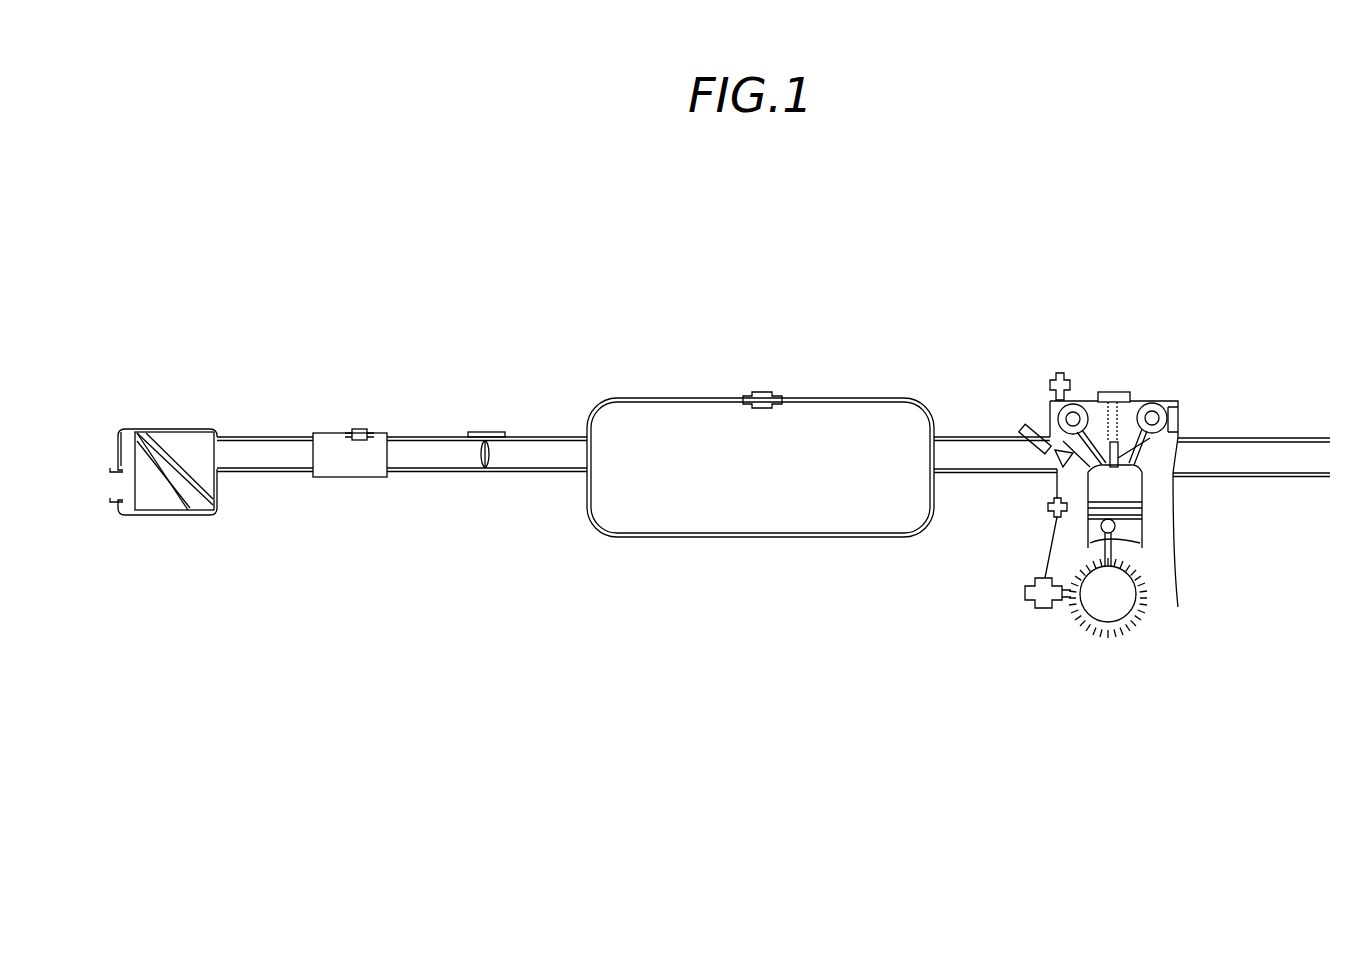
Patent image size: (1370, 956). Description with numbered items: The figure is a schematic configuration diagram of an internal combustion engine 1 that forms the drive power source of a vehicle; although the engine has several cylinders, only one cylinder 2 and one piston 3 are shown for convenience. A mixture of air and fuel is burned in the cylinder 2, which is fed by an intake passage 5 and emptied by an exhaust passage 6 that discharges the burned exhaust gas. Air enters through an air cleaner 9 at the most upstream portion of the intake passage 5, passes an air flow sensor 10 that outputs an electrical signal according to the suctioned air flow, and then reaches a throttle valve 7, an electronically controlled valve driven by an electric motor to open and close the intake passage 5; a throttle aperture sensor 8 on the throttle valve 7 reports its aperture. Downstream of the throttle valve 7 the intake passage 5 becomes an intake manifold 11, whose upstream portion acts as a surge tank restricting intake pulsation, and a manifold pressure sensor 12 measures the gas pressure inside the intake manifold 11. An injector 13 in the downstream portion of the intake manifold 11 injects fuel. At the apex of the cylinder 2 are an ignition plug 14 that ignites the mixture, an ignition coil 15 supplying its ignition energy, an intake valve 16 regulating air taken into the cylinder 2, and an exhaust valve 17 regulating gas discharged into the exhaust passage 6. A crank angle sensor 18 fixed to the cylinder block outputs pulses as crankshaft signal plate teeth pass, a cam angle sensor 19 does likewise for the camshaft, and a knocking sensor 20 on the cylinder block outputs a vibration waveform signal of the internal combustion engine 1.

The internal combustion engine 1 is at (1208, 355).
The cylinder 2 is at (1170, 530).
The piston 3 is at (1152, 539).
The intake passage 5 is at (637, 516).
The exhaust passage 6 is at (1251, 496).
The throttle valve 7 is at (525, 514).
The throttle aperture sensor 8 is at (508, 383).
The air cleaner 9 is at (166, 521).
The air flow sensor 10 is at (379, 403).
The intake manifold 11 is at (760, 516).
The manifold pressure sensor 12 is at (787, 338).
The injector 13 is at (985, 412).
The ignition plug 14 is at (1172, 424).
The ignition coil 15 is at (1103, 364).
The intake valve 16 is at (1016, 402).
The exhaust valve 17 is at (1149, 368).
The crank angle sensor 18 is at (1044, 602).
The cam angle sensor 19 is at (1026, 337).
The knocking sensor 20 is at (1012, 530).